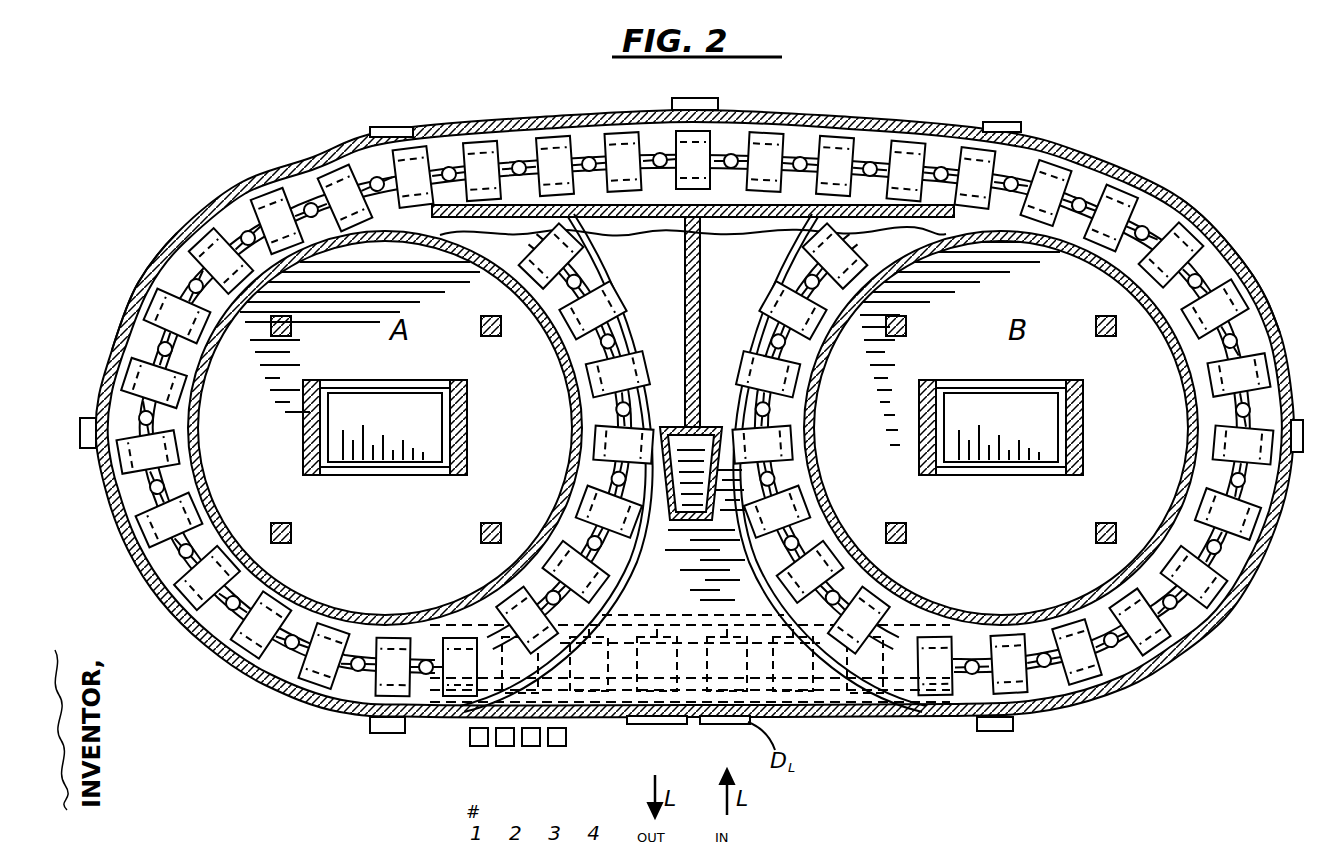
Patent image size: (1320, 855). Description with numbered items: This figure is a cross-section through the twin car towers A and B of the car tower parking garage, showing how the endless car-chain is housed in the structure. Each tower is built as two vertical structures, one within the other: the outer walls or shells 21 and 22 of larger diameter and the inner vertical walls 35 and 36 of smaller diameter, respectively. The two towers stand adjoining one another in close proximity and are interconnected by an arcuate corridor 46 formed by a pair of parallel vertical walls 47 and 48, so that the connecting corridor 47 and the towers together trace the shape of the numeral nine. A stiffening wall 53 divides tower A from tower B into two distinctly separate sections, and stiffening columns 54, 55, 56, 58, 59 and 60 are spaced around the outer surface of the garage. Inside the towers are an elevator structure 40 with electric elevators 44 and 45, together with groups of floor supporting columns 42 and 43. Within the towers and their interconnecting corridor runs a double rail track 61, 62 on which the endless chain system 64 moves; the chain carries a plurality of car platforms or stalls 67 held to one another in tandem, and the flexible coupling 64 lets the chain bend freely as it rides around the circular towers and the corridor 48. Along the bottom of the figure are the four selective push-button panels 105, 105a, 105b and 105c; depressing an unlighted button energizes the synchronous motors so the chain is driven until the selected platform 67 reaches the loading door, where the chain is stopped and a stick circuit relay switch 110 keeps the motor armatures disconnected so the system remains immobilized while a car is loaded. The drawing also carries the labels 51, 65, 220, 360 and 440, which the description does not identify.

The vertical outer wall or shell 21 is at (125, 347).
The vertical outer wall or shell 22 is at (1202, 246).
The inner vertical wall 35 is at (577, 460).
The inner vertical wall 36 is at (806, 432).
The elevator structure 40 is at (409, 427).
The floor supporting columns 42 is at (292, 327).
The floor supporting columns 43 is at (907, 327).
The electric elevator 44 is at (425, 426).
The electric elevator 45 is at (1042, 426).
The arcuate corridor 46 is at (695, 392).
The vertical wall of corridor 47 is at (883, 119).
The vertical wall of corridor 48 is at (761, 217).
The bottom connections 51 is at (927, 717).
The stiffening wall 53 is at (685, 266).
The stiffening column 54 is at (86, 440).
The stiffening column 55 is at (395, 127).
The stiffening column 56 is at (690, 99).
The stiffening column 58 is at (1296, 455).
The stiffening column 59 is at (997, 731).
The stiffening column 60 is at (390, 733).
The rail of double rail track 61 is at (140, 492).
The rail of double rail track 62 is at (180, 468).
The endless chain system 64 is at (162, 640).
The chain 65 is at (218, 655).
The car platform or stall 67 is at (286, 650).
The push-button panel 105 is at (470, 740).
The push-button panel 105a is at (470, 745).
The push-button panel 105b is at (540, 744).
The push-button panel 105c is at (566, 736).
The stick circuit relay switch 110 is at (481, 764).
The scale value 220 is at (511, 779).
The scale value 360 is at (546, 779).
The scale value 440 is at (564, 762).